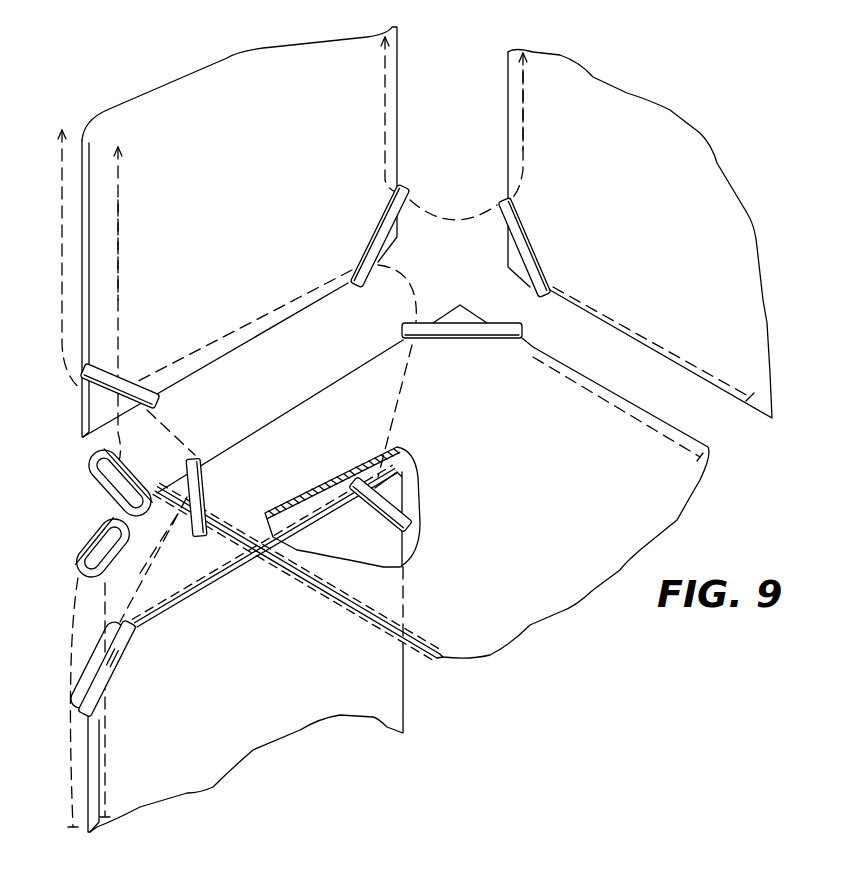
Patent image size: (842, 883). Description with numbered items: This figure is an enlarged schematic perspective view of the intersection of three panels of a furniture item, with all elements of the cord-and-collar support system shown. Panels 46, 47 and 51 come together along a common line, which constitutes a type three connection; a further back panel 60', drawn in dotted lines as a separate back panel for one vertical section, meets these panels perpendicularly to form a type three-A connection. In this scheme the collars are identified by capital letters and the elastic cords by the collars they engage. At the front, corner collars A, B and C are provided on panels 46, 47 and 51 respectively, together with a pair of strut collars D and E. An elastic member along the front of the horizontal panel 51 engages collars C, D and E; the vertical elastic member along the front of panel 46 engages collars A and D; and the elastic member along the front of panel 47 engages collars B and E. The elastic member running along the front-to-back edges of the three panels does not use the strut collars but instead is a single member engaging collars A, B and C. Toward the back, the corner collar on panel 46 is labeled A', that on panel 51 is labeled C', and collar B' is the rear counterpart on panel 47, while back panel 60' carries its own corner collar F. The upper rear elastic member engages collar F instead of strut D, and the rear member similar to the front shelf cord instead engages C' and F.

The panel 46 is at (277, 189).
The panel 47 is at (244, 682).
The horizontal panel 51 is at (488, 469).
The back panel 60' is at (640, 234).
The corner collar A is at (120, 360).
The corner collar A' is at (374, 223).
The corner collar B is at (119, 668).
The corner collar B' is at (405, 505).
The corner collar C is at (226, 494).
The corner collar C' is at (462, 370).
The strut collar D is at (90, 485).
The strut collar E is at (83, 543).
The corner collar F is at (541, 243).